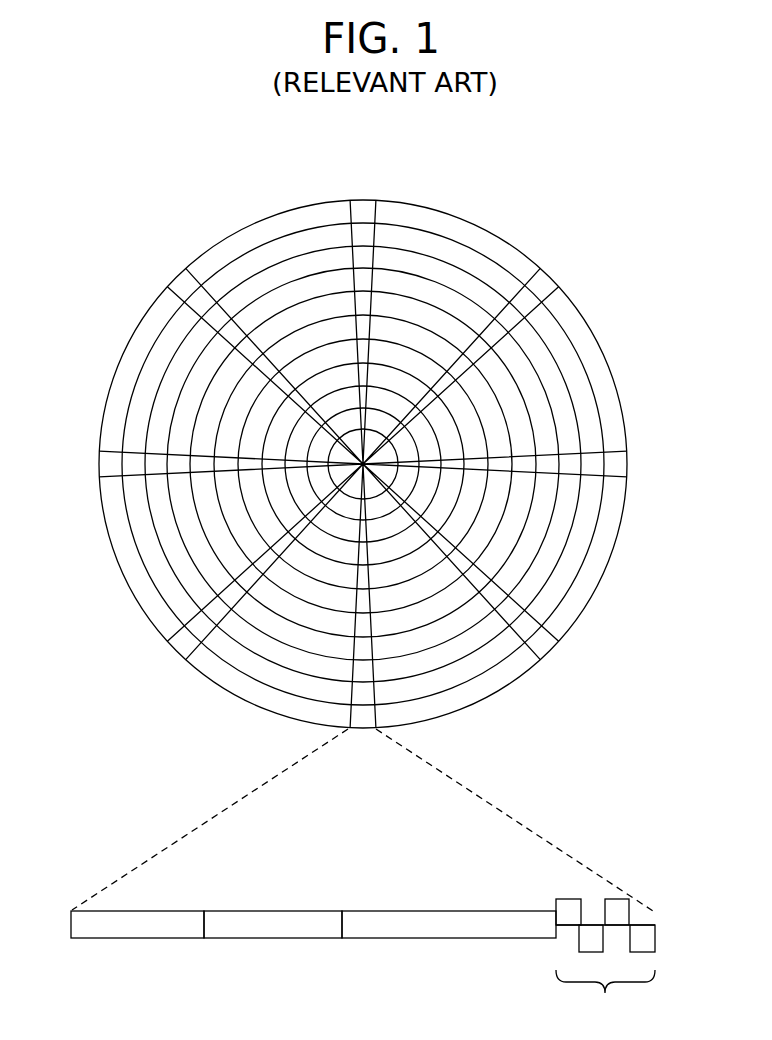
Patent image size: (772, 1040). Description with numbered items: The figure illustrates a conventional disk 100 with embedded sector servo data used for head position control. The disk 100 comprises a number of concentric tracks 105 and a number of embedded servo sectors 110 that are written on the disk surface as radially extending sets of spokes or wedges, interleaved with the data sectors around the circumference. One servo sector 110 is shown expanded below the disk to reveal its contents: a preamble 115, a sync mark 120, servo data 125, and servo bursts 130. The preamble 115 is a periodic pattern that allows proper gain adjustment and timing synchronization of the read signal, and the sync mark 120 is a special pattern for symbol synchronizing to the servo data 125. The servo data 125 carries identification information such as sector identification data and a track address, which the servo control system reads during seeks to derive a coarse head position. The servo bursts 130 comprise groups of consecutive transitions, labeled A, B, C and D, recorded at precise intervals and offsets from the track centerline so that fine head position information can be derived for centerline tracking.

The disk 100 is at (122, 143).
The concentric tracks 105 is at (450, 250).
The embedded servo sectors 110 is at (363, 205).
The preamble 115 is at (128, 938).
The sync mark 120 is at (257, 938).
The servo data 125 is at (382, 938).
The servo bursts 130 is at (538, 886).